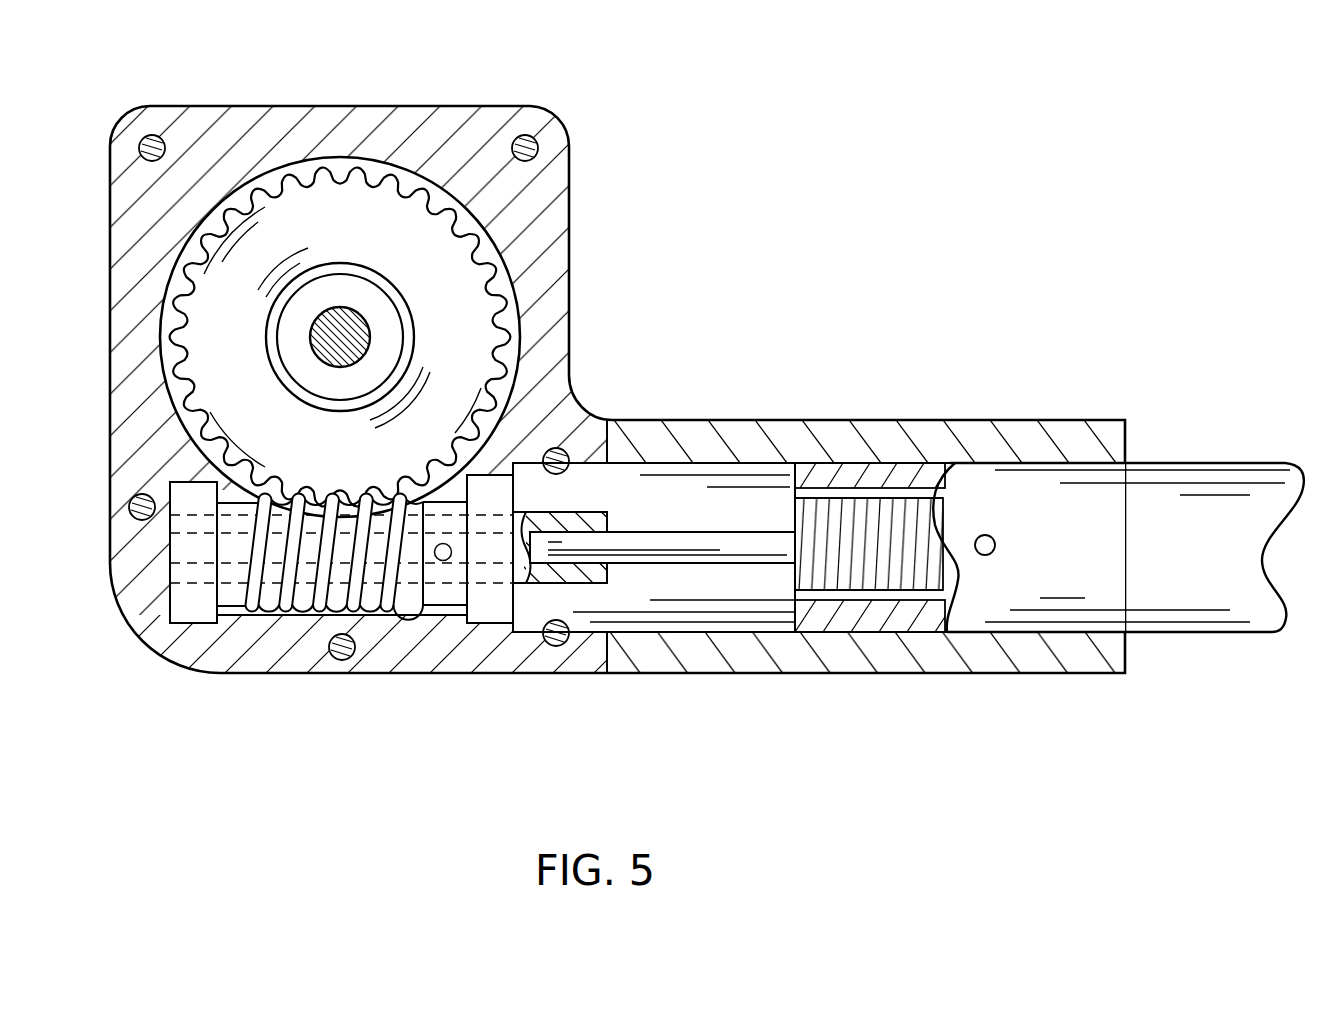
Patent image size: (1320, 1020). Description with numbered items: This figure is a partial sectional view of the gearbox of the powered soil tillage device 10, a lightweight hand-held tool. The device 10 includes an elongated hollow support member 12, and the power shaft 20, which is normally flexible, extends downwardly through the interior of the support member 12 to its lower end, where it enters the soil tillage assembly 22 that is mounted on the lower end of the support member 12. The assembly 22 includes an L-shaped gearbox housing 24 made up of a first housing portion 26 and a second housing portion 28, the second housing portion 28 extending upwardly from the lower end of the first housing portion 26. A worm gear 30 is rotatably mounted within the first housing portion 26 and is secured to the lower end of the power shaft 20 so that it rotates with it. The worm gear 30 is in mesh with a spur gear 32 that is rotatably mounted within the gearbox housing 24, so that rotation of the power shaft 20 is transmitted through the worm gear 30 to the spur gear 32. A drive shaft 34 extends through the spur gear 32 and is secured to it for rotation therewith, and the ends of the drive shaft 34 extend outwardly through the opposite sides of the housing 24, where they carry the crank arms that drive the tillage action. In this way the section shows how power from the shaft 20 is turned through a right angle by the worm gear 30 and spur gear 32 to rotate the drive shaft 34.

The powered soil tillage device 10 is at (886, 417).
The elongated hollow support member 12 is at (1229, 440).
The power shaft 20 is at (878, 522).
The soil tillage assembly 22 is at (769, 315).
The gearbox housing 24 is at (582, 270).
The first housing portion 26 is at (781, 440).
The second housing portion 28 is at (538, 185).
The worm gear 30 is at (378, 560).
The spur gear 32 is at (468, 327).
The drive shaft 34 is at (338, 332).